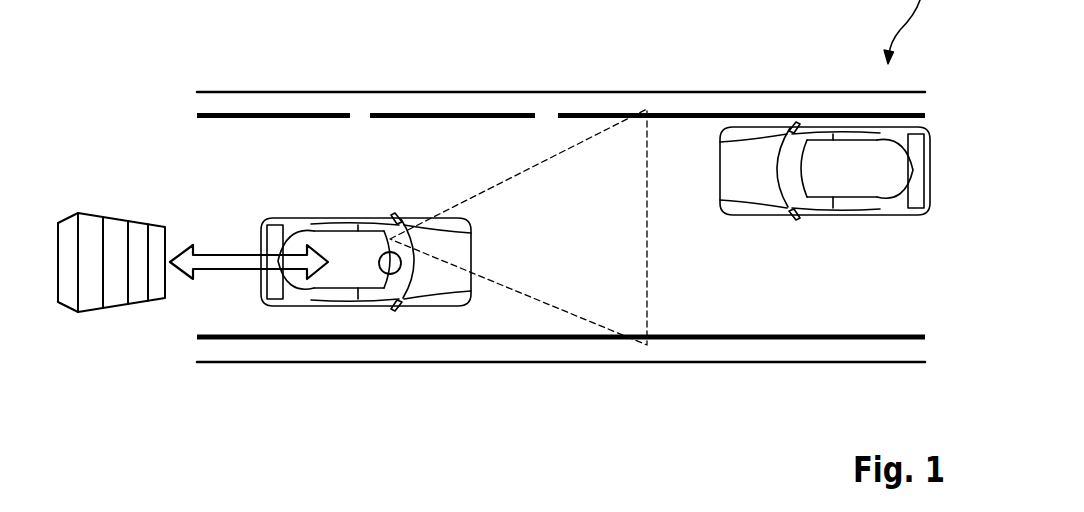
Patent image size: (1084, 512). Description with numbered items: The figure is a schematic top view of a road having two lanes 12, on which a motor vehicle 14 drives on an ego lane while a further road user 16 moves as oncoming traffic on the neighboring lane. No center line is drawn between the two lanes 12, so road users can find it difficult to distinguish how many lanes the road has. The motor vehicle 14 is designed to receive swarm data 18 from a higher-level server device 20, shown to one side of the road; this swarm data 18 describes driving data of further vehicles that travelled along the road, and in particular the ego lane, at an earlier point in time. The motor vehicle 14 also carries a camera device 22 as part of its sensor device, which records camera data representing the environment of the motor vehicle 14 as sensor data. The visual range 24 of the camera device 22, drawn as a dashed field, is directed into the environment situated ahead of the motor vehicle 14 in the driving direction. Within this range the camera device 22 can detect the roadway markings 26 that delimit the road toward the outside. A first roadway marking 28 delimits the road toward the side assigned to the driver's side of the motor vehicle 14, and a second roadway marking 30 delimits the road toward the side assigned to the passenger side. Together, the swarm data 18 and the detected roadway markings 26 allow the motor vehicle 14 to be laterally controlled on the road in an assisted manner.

The lane 12 is at (529, 229).
The motor vehicle 14 is at (346, 265).
The further road user 16 is at (838, 164).
The swarm data 18 is at (241, 272).
The higher-level server device 20 is at (90, 212).
The camera device 22 is at (390, 275).
The visual range 24 is at (636, 315).
The roadway markings 26 is at (775, 112).
The first roadway marking 28 is at (728, 91).
The second roadway marking 30 is at (731, 340).